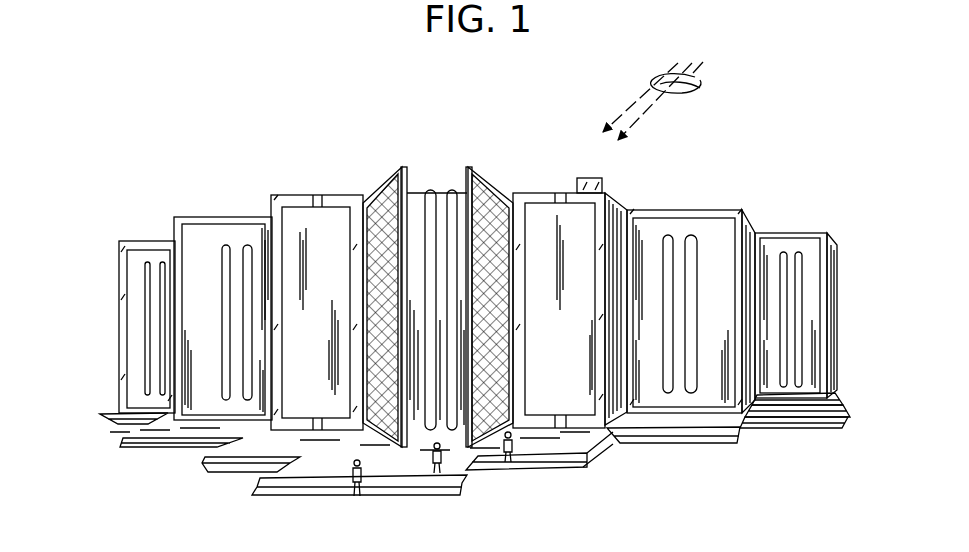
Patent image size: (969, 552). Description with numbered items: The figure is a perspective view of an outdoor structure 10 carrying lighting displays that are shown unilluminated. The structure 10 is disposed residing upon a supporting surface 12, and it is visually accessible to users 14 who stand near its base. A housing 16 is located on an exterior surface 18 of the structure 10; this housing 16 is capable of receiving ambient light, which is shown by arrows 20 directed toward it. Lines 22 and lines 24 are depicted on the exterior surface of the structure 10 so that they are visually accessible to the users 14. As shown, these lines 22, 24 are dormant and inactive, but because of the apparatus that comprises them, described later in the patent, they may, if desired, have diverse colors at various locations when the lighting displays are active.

The structure 10 is at (688, 206).
The supporting surface 12 is at (213, 481).
The users 14 is at (502, 458).
The housing 16 is at (604, 184).
The exterior surface 18 is at (511, 198).
The arrows 20 is at (695, 77).
The lines 22 is at (278, 368).
The lines 24 is at (465, 168).